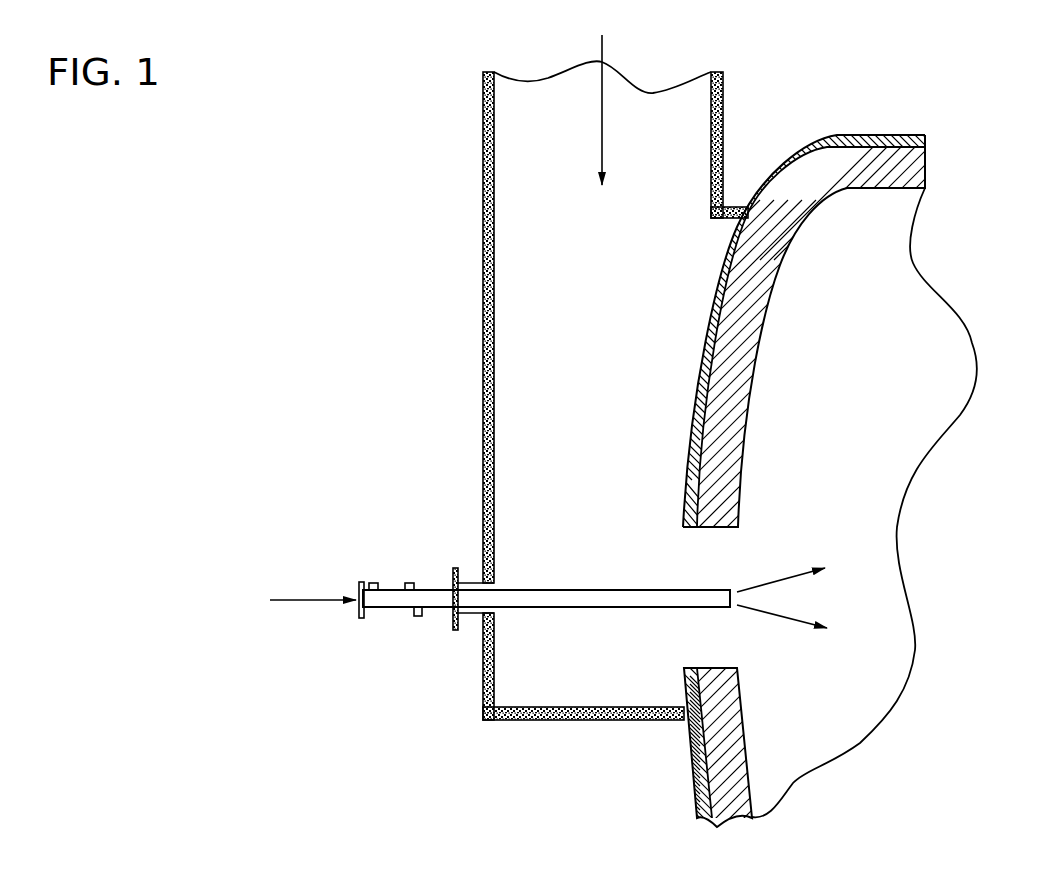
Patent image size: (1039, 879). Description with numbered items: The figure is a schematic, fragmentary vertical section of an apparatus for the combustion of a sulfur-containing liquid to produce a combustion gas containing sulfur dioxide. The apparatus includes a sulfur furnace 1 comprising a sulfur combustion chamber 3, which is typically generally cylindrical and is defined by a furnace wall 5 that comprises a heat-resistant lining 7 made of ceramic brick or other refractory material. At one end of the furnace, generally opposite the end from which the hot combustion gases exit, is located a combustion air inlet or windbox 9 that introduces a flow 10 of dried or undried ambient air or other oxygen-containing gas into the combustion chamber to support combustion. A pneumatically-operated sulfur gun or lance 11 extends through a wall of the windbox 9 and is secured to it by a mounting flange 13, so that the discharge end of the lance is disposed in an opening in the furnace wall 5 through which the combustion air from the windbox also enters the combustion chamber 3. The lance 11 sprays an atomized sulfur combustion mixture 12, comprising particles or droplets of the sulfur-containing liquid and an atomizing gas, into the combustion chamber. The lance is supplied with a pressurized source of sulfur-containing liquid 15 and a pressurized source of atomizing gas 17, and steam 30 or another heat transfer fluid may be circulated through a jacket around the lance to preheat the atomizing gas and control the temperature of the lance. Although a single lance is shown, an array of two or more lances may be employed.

The sulfur furnace 1 is at (333, 760).
The sulfur combustion chamber 3 is at (866, 383).
The furnace wall 5 is at (865, 135).
The heat-resistant lining 7 is at (913, 158).
The combustion air inlet or windbox 9 is at (483, 232).
The flow of air 10 is at (603, 43).
The sulfur gun or lance 11 is at (380, 608).
The atomized sulfur combustion mixture 12 is at (785, 575).
The mounting flange 13 is at (457, 631).
The pressurized source of sulfur-containing liquid 15 is at (272, 598).
The pressurized source of atomizing gas 17 is at (373, 576).
The steam 30 is at (410, 576).